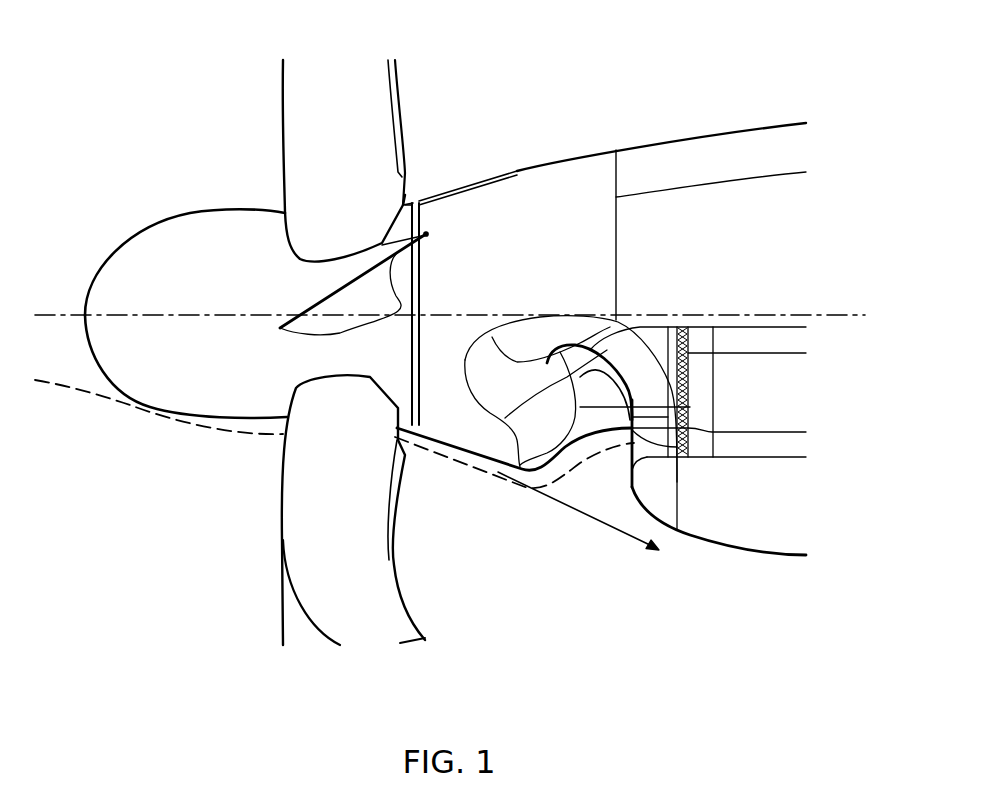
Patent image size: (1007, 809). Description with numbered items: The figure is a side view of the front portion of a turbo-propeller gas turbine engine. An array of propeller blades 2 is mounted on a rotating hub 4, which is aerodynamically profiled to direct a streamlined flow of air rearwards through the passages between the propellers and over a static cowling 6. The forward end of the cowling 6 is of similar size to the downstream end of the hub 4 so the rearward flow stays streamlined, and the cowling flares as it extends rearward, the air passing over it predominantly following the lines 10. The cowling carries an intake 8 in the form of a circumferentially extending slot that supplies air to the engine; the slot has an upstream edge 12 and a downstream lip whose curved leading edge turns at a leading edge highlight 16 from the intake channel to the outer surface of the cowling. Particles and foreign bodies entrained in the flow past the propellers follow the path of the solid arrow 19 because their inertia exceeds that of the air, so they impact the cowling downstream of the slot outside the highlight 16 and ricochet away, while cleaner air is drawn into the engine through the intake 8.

The propeller blades 2 is at (375, 117).
The rotating hub 4 is at (178, 402).
The static cowling 6 is at (483, 198).
The intake 8 is at (597, 468).
The lines 10 is at (465, 462).
The upstream edge 12 is at (540, 462).
The leading edge highlight 16 is at (632, 488).
The solid arrow 19 is at (626, 536).